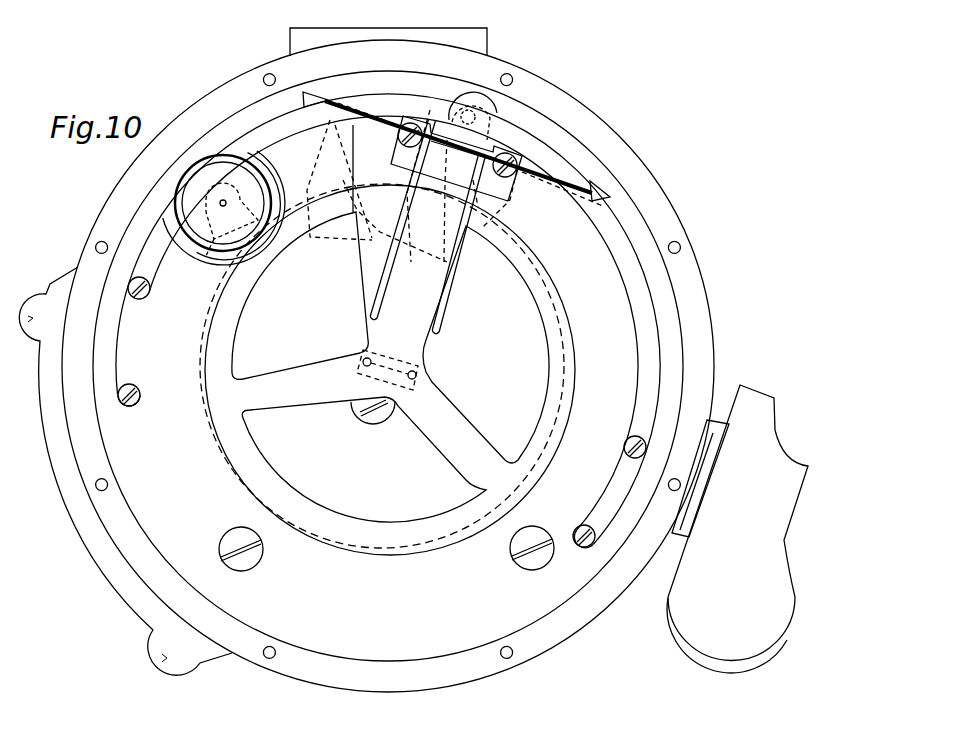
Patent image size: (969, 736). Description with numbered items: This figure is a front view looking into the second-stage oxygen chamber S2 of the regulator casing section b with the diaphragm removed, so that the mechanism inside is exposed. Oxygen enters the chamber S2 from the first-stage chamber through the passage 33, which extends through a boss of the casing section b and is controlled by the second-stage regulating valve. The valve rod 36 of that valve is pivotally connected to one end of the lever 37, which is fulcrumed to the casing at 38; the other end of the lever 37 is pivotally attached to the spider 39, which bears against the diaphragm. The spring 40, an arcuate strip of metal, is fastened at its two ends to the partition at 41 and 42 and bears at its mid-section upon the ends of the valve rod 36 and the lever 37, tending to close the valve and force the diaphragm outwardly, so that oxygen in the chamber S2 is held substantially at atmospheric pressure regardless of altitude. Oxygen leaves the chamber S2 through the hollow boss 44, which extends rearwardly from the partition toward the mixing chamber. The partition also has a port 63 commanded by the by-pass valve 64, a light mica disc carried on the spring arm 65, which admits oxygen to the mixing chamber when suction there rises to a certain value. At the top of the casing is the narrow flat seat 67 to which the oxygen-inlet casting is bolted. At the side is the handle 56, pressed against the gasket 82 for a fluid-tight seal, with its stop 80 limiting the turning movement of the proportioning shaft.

The casing section b is at (386, 693).
The flat seat 67 is at (291, 44).
The spring 40 is at (623, 261).
The spring fastening 41 is at (138, 387).
The spring fastening 42 is at (600, 462).
The spider 39 is at (560, 395).
The lever 37 is at (442, 306).
The fulcrum 38 is at (437, 121).
The passage 33 is at (458, 94).
The valve rod 36 is at (480, 113).
The hollow boss 44 is at (382, 232).
The port 63 is at (262, 176).
The by-pass valve 64 is at (253, 197).
The spring arm 65 is at (200, 256).
The stop 80 is at (741, 390).
The handle 56 is at (690, 643).
The gasket 82 is at (672, 545).
The second-stage oxygen chamber S2 is at (386, 573).